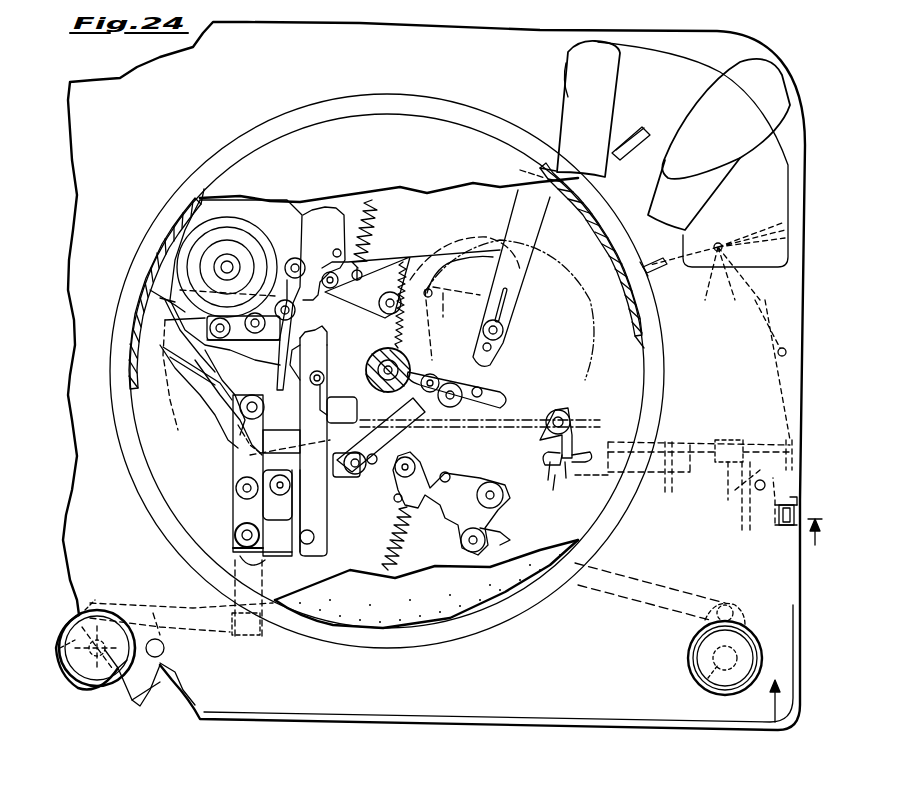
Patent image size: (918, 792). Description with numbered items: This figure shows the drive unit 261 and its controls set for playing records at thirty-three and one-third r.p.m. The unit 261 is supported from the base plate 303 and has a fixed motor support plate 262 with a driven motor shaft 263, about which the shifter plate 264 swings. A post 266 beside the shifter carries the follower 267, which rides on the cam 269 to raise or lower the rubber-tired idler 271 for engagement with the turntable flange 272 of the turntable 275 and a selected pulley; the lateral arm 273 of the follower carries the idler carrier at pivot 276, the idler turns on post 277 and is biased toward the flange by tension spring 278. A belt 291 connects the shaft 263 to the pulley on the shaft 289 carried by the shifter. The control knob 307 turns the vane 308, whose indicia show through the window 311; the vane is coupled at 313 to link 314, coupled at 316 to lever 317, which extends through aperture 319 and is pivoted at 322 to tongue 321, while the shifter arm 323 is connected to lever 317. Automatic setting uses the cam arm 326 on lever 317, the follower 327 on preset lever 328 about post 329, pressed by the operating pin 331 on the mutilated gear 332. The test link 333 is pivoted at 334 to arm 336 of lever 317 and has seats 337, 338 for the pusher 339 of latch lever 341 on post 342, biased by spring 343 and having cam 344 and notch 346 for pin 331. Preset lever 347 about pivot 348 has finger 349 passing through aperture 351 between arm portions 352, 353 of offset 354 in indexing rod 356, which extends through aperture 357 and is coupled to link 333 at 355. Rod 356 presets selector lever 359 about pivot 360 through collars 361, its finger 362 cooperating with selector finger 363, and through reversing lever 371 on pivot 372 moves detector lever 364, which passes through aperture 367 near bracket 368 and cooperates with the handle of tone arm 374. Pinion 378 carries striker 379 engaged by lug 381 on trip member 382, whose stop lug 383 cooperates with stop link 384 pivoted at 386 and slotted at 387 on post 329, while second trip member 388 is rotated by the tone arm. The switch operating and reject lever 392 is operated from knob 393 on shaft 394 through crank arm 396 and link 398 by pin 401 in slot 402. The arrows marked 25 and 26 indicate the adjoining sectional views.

The section line 25- 25 is at (443, 527).
The plate 26 is at (604, 507).
The drive unit 261 is at (163, 280).
The motor support plate 262 is at (163, 317).
The motor shaft 263 is at (192, 326).
The shifter plate 264 is at (215, 395).
The vertical post 266 is at (292, 312).
The follower 267 is at (243, 357).
The cam 269 is at (272, 296).
The idler 271 is at (202, 222).
The turntable flange 272 is at (160, 295).
The lateral arm 273 is at (308, 247).
The turntable 275 is at (396, 130).
The idler carrier pivot 276 is at (296, 248).
The idler post 277 is at (228, 262).
The tension spring 278 is at (168, 300).
The vertical shaft 289 is at (255, 333).
The belt 291 is at (220, 353).
The base plate 303 is at (546, 712).
The control knob 307 is at (83, 680).
The indicator and crank plate 308 is at (150, 682).
The window 311 is at (160, 635).
The pivotal coupling 313 is at (107, 600).
The link 314 is at (188, 583).
The pivotal coupling 316 is at (260, 633).
The lever 317 is at (235, 508).
The aperture 319 is at (233, 535).
The tongue 321 is at (235, 535).
The lever pivot 322 is at (232, 548).
The shifter arm 323 is at (215, 420).
The cam arm 326 is at (280, 455).
The follower 327 is at (278, 495).
The preset lever 328 is at (342, 454).
The post 329 is at (353, 472).
The operating member 331 is at (433, 280).
The mutilated gear 332 is at (583, 378).
The test link 333 is at (317, 505).
The pivot 334 is at (315, 535).
The lateral arm 336 is at (280, 553).
The first seat 337 is at (330, 350).
The second seat 338 is at (323, 327).
The pusher 339 is at (330, 277).
The latch lever 341 is at (397, 265).
The vertical post 342 is at (390, 295).
The spring 343 is at (378, 213).
The cam 344 is at (512, 278).
The notch 346 is at (430, 355).
The preset lever 347 is at (580, 440).
The pivot 348 is at (570, 418).
The vertical finger 349 is at (562, 468).
The clearance aperture 351 is at (548, 462).
The arm portion 352 is at (699, 456).
The arm portion 353 is at (548, 475).
The offset 354 is at (592, 478).
The pivotal coupling 355 is at (335, 370).
The indexing rod 356 is at (665, 480).
The aperture 357 is at (357, 410).
The selector lever 359 is at (773, 287).
The pivot 360 is at (778, 352).
The collars 361 is at (728, 462).
The vertical finger 362 is at (740, 293).
The selector finger 363 is at (727, 233).
The detector lever 364 is at (775, 523).
The clearance aperture 367 is at (797, 502).
The bracket 368 is at (790, 497).
The reversing lever 371 is at (735, 502).
The pivot 372 is at (745, 487).
The tone arm 374 is at (690, 193).
The driven pinion 378 is at (408, 362).
The striker 379 is at (413, 318).
The upright lug 381 is at (436, 375).
The trip member 382 is at (480, 401).
The stop member 383 is at (462, 390).
The stop link 384 is at (422, 435).
The pivot 386 is at (238, 488).
The slot 387 is at (372, 467).
The second trip member 388 is at (465, 440).
The switch operating and reject lever 392 is at (472, 490).
The second control knob 393 is at (722, 683).
The vertical shaft 394 is at (700, 680).
The crank arm 396 is at (773, 613).
The link 398 is at (665, 612).
The pin 401 is at (410, 538).
The slot 402 is at (500, 533).